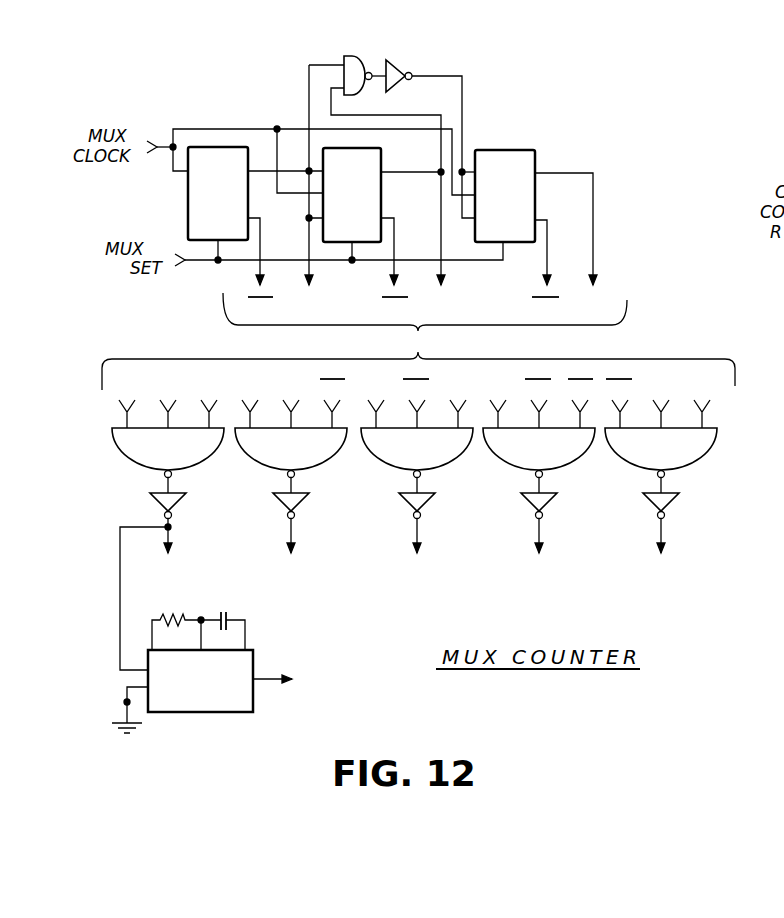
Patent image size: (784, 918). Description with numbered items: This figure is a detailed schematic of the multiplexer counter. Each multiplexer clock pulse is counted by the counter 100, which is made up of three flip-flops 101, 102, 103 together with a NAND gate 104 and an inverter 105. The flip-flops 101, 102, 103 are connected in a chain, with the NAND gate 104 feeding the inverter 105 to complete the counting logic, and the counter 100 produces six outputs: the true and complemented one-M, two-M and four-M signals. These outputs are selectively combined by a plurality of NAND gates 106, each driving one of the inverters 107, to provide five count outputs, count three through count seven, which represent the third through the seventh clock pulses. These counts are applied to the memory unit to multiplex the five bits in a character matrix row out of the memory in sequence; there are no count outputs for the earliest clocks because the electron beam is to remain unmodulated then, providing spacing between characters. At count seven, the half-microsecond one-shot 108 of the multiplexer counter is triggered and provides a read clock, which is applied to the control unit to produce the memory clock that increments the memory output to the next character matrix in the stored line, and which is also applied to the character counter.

The counter 100 is at (261, 93).
The flip-flop 101 is at (188, 202).
The flip-flop 102 is at (385, 158).
The flip-flop 103 is at (512, 149).
The NAND gate 104 is at (357, 55).
The inverter 105 is at (402, 59).
The NAND gates 106 is at (773, 463).
The inverters 107 is at (753, 523).
The one-shot 108 is at (255, 658).